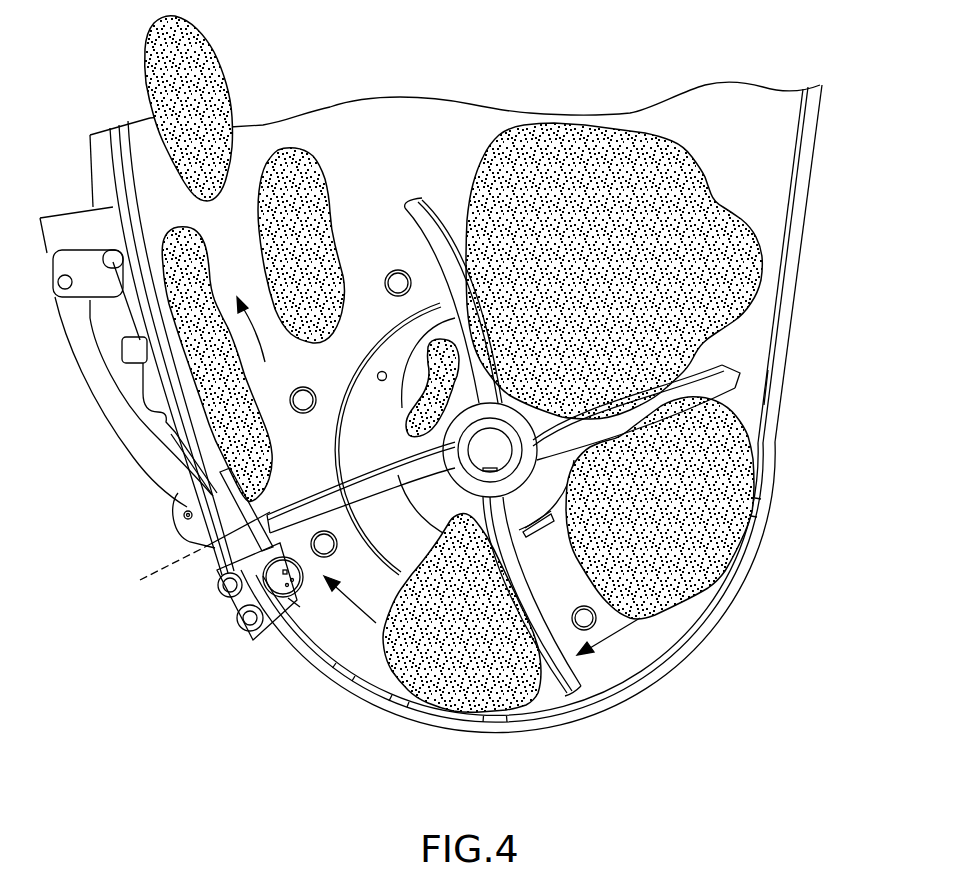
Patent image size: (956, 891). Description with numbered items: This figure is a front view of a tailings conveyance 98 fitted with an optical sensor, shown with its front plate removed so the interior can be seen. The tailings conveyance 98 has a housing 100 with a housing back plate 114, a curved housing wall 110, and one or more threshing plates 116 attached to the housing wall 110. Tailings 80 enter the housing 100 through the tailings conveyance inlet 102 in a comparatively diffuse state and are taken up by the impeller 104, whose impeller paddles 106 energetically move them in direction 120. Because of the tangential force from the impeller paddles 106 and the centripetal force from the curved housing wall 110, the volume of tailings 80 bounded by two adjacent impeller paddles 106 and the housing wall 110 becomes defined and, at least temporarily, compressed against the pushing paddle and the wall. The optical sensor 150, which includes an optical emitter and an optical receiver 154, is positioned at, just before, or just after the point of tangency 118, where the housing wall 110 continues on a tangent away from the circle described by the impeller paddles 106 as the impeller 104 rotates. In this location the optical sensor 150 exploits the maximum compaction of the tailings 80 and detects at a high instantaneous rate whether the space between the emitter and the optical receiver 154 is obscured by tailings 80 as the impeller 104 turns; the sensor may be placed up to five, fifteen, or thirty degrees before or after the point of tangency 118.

The tailings 80 is at (562, 148).
The tailings conveyance 98 is at (813, 139).
The housing 100 is at (808, 193).
The tailings conveyance inlet 102 is at (553, 500).
The impeller 104 is at (738, 384).
The impeller paddles 106 is at (573, 695).
The housing wall 110 is at (770, 383).
The housing back plate 114 is at (640, 652).
The threshing plates 116 is at (345, 663).
The point of tangency 118 is at (143, 578).
The direction 120 is at (248, 337).
The optical sensor 150 is at (280, 582).
The optical receiver 154 is at (280, 588).